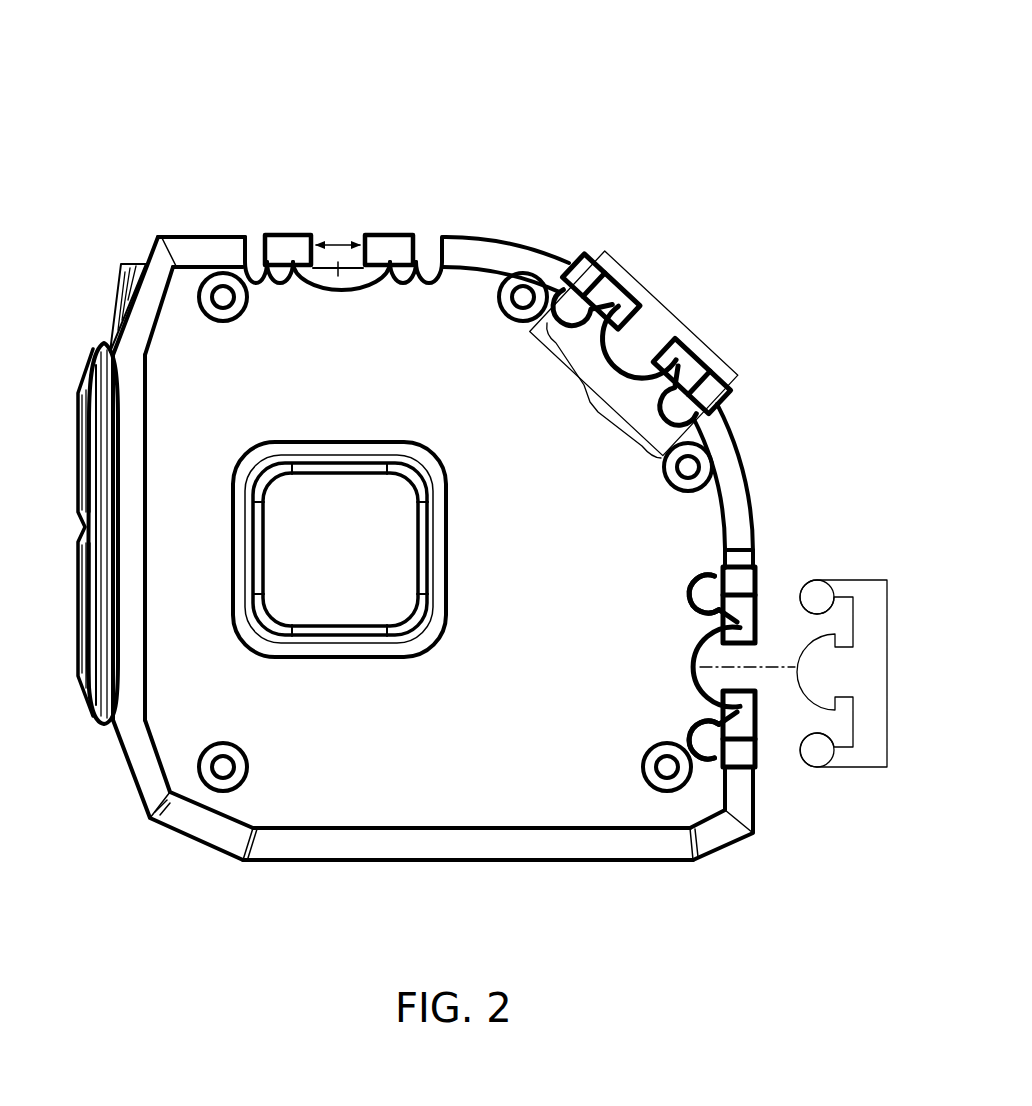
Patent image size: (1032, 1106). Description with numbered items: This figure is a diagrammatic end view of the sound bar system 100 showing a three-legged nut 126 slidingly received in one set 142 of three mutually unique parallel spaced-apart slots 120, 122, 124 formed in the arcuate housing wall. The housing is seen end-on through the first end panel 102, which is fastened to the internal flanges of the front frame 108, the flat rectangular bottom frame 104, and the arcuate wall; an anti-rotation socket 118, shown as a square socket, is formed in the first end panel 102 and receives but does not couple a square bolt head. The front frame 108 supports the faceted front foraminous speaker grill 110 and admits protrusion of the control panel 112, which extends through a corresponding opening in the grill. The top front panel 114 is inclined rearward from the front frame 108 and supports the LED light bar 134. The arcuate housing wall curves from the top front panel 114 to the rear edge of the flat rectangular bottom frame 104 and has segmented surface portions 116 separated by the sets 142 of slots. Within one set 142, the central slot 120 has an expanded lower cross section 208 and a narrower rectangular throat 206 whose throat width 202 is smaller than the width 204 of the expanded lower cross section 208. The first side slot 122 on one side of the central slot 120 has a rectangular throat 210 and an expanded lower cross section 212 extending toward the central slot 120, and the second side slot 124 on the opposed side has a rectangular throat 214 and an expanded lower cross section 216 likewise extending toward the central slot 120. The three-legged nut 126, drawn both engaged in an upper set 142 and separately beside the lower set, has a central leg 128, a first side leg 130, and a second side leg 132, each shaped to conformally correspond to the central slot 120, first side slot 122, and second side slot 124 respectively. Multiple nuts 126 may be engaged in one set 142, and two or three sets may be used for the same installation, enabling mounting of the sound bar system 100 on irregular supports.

The sound bar system 100 is at (133, 36).
The first end panel 102 is at (588, 840).
The flat rectangular bottom frame 104 is at (447, 843).
The front frame 108 is at (127, 383).
The faceted front foraminous speaker grill 110 is at (103, 537).
The control panel 112 is at (78, 598).
The top front panel 114 is at (150, 283).
The segmented surface portions 116 is at (525, 257).
The anti-rotation socket 118 is at (325, 585).
The central slot 120 is at (712, 650).
The first side slot 122 is at (722, 597).
The second side slot 124 is at (716, 745).
The three-legged nut 126 is at (660, 327).
The central leg 128 is at (818, 665).
The first side leg 130 is at (822, 592).
The second side leg 132 is at (823, 755).
The LED light bar 134 is at (123, 273).
The set of mutually unique parallel spaced-apart slots 142 is at (602, 390).
The throat width 202 is at (343, 235).
The width of the expanded lower cross section 204 is at (335, 283).
The rectangular throat 206 is at (332, 238).
The expanded lower cross section 208 is at (340, 295).
The rectangular throat 210 is at (252, 245).
The expanded lower cross section 212 is at (280, 275).
The rectangular throat 214 is at (420, 245).
The expanded lower cross section 216 is at (407, 270).